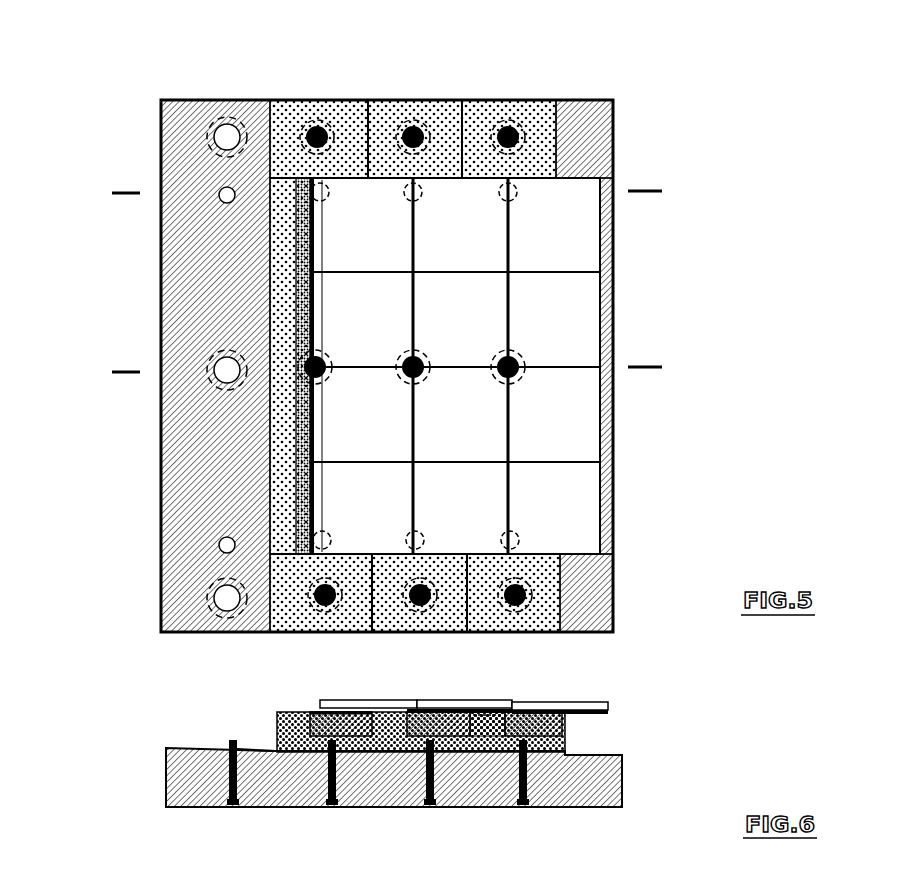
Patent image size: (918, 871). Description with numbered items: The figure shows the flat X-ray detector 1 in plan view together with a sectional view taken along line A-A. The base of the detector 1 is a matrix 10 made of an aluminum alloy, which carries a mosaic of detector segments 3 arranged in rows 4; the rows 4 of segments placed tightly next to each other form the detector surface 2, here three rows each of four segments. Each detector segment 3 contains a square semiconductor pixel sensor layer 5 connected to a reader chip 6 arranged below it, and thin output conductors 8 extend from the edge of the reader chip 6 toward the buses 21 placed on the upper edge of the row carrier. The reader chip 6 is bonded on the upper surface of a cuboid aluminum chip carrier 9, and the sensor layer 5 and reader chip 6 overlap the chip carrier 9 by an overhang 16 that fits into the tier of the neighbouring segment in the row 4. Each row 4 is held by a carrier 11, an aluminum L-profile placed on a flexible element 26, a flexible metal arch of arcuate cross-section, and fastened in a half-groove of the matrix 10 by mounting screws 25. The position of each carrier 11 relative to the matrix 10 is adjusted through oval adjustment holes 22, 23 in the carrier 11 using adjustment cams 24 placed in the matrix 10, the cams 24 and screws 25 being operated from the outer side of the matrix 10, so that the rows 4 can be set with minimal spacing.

In FIG. 5, the detector 1 is at (611, 77).
In FIG. 6, the detector 1 is at (138, 822).
In FIG. 5, the detector surface 2 is at (578, 334).
In FIG. 6, the detector surface 2 is at (400, 698).
In FIG. 5, the detector segment 3 is at (584, 253).
In FIG. 6, the detector segment 3 is at (545, 700).
In FIG. 5, the row 4 is at (352, 196).
In FIG. 5, the sensor layer 5 is at (587, 447).
In FIG. 6, the sensor layer 5 is at (608, 703).
In FIG. 6, the reader chip 6 is at (597, 717).
In FIG. 5, the output conductor 8 is at (308, 430).
In FIG. 6, the chip carrier 9 is at (555, 727).
In FIG. 5, the matrix 10 is at (610, 148).
In FIG. 6, the matrix 10 is at (622, 783).
In FIG. 5, the carrier 11 is at (305, 110).
In FIG. 6, the carrier 11 is at (482, 740).
In FIG. 6, the overhang 16 is at (590, 734).
In FIG. 6, the bus 21 is at (485, 716).
In FIG. 5, the adjustment hole 22 is at (316, 607).
In FIG. 5, the adjustment hole 23 is at (304, 362).
In FIG. 5, the adjustment cam 24 is at (306, 128).
In FIG. 6, the mounting screw 25 is at (237, 802).
In FIG. 6, the flexible element 26 is at (252, 748).